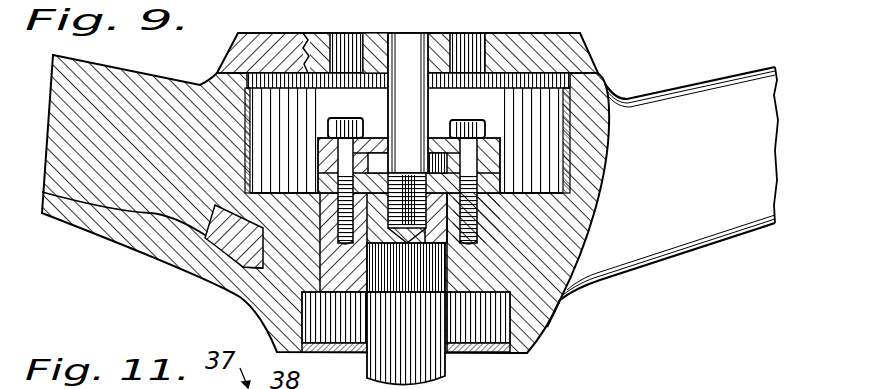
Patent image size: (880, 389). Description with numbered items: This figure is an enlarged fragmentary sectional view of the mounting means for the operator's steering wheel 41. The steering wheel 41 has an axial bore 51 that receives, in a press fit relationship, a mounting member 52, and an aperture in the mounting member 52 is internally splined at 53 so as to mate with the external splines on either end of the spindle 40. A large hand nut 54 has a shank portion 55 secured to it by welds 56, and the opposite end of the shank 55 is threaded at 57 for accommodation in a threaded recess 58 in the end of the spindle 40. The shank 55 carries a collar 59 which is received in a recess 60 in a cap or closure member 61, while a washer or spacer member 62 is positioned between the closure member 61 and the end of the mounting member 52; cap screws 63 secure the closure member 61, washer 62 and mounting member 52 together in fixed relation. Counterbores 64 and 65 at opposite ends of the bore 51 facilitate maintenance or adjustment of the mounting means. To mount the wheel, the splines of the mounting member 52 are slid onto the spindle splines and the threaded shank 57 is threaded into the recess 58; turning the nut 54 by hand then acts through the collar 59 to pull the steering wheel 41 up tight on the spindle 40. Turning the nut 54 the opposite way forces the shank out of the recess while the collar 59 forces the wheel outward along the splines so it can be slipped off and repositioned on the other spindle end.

The spindle 40 is at (443, 365).
The steering wheel 41 is at (687, 100).
The axial bore 51 is at (497, 280).
The mounting member 52 is at (484, 222).
The internal splines 53 is at (425, 275).
The hand nut 54 is at (535, 47).
The shank portion 55 is at (420, 103).
The welds 56 is at (388, 34).
The threaded end of shank 57 is at (342, 164).
The threaded recess 58 is at (437, 223).
The collar 59 is at (428, 143).
The recess 60 is at (388, 157).
The cap or closure member 61 is at (484, 150).
The washer or spacer member 62 is at (493, 183).
The cap screws 63 is at (331, 124).
The counterbore 64 is at (248, 126).
The counterbore 65 is at (305, 320).